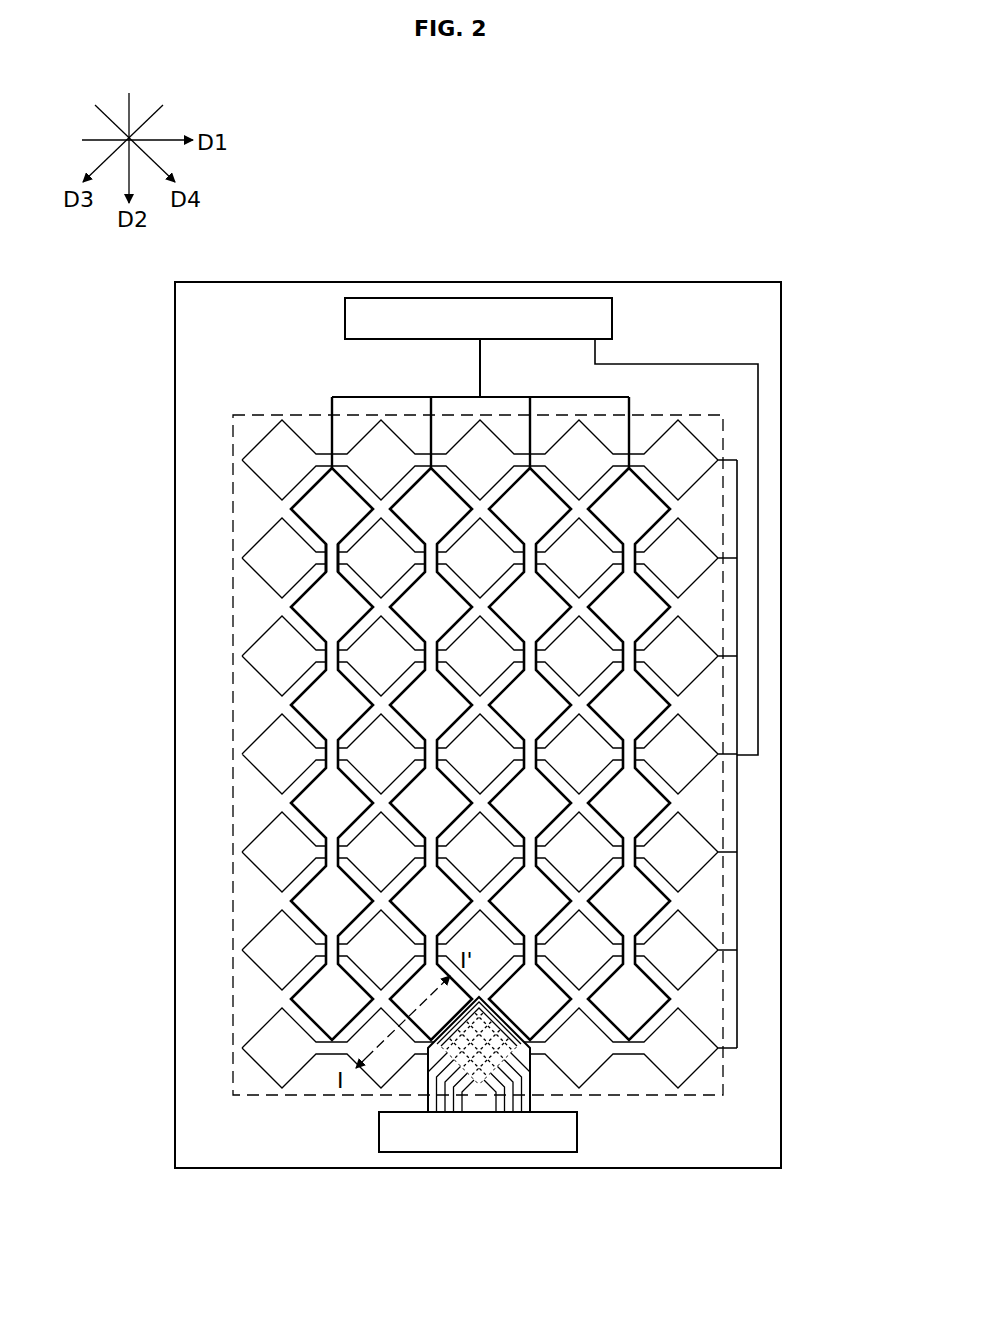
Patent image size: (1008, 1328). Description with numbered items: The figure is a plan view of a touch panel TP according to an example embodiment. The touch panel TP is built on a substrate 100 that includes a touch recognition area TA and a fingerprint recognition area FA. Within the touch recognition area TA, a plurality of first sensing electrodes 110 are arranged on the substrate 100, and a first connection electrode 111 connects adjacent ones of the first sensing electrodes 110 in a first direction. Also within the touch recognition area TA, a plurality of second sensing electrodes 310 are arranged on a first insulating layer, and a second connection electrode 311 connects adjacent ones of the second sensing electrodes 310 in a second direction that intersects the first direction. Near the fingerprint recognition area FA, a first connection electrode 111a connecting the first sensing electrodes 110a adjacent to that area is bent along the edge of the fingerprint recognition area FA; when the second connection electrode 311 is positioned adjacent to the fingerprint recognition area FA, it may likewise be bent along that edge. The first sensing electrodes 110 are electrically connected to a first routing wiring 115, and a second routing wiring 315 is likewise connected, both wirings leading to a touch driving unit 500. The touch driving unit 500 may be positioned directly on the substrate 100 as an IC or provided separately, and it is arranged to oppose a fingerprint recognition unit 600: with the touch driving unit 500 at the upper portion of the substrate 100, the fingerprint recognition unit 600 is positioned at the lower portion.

The substrate 100 is at (775, 322).
The first sensing electrode 110 is at (262, 452).
The first sensing electrode adjacent to the fingerprint recognition area 110a is at (388, 1060).
The first connection electrode 111 is at (330, 458).
The first connection electrode adjacent to the fingerprint recognition area 111a is at (432, 1028).
The first routing wiring 115 is at (760, 404).
The second sensing electrode 310 is at (315, 523).
The second connection electrode 311 is at (330, 558).
The second routing wiring 315 is at (478, 362).
The touch driving unit 500 is at (537, 312).
The fingerprint recognition unit 600 is at (478, 1135).
The touch panel TP is at (699, 261).
The touch recognition area TA is at (688, 1096).
The fingerprint recognition area FA is at (533, 1052).